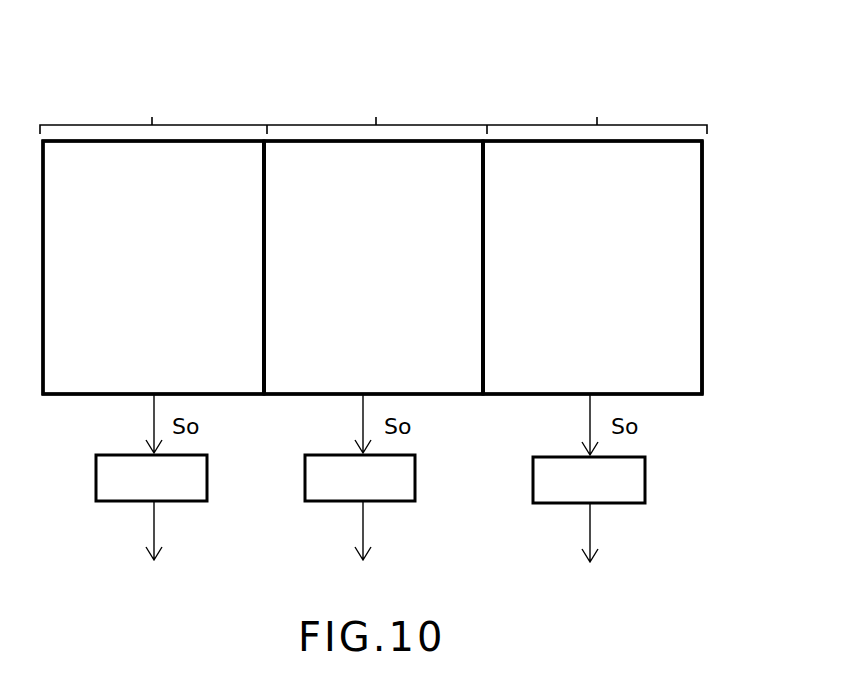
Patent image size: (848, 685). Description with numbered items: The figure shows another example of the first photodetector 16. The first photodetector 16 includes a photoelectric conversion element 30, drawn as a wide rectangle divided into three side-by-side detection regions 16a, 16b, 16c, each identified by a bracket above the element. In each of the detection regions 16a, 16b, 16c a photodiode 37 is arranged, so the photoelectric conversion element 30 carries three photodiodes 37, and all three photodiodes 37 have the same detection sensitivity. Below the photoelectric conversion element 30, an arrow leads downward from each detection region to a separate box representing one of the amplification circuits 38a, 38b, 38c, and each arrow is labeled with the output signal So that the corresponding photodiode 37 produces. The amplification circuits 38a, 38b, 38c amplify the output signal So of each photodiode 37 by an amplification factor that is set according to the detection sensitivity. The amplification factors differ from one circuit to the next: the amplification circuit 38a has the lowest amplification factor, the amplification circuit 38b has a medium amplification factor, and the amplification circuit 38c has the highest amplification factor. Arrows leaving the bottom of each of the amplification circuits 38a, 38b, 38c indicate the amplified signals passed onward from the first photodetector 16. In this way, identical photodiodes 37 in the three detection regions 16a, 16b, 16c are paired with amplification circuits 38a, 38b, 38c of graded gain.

The first photodetector 16 is at (54, 44).
The detection region 16a is at (153, 238).
The detection region 16b is at (373, 238).
The detection region 16c is at (592, 238).
The photodiode 37 is at (230, 140).
The photoelectric conversion element 30 is at (708, 223).
The amplification circuit 38a is at (208, 478).
The amplification circuit 38b is at (415, 478).
The amplification circuit 38c is at (645, 480).